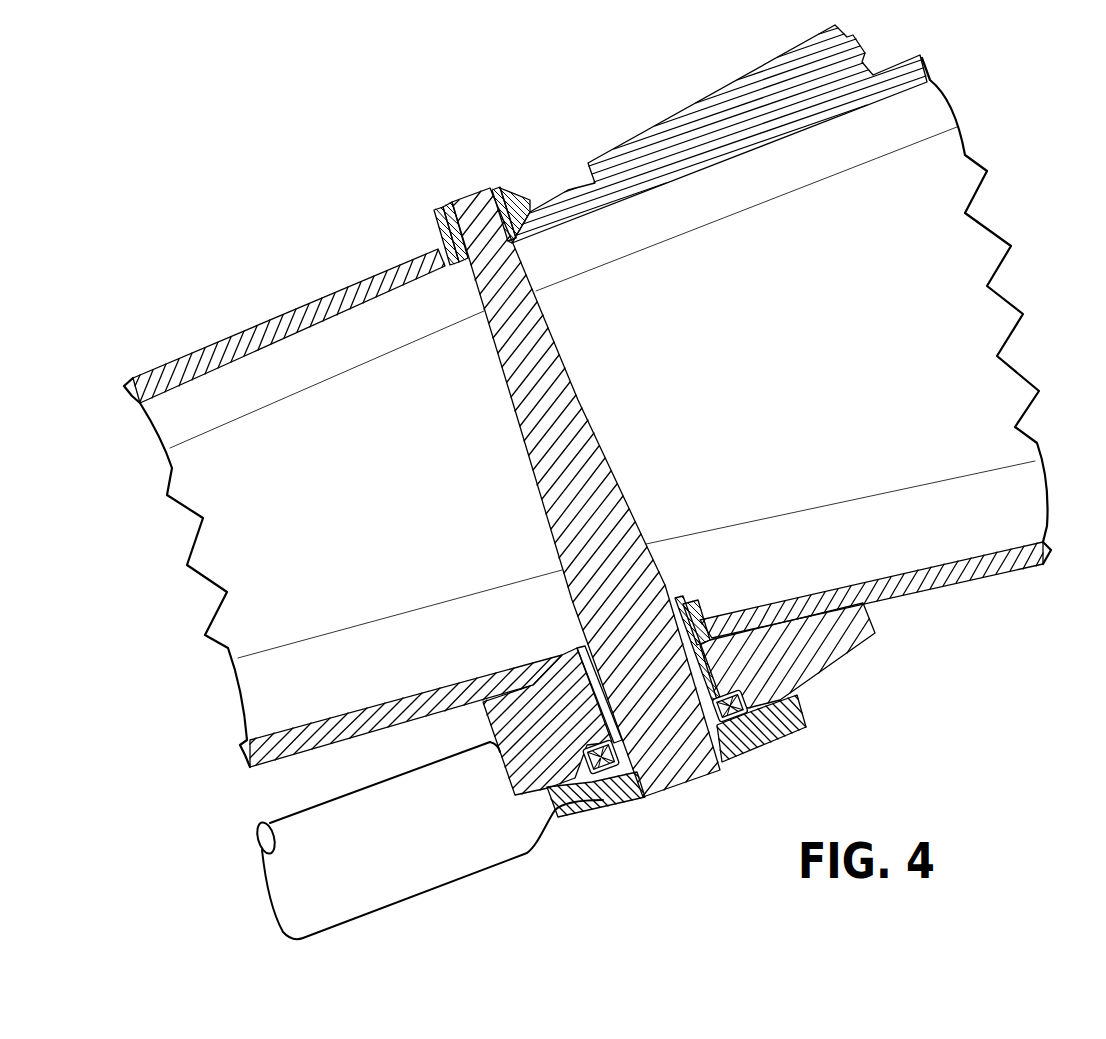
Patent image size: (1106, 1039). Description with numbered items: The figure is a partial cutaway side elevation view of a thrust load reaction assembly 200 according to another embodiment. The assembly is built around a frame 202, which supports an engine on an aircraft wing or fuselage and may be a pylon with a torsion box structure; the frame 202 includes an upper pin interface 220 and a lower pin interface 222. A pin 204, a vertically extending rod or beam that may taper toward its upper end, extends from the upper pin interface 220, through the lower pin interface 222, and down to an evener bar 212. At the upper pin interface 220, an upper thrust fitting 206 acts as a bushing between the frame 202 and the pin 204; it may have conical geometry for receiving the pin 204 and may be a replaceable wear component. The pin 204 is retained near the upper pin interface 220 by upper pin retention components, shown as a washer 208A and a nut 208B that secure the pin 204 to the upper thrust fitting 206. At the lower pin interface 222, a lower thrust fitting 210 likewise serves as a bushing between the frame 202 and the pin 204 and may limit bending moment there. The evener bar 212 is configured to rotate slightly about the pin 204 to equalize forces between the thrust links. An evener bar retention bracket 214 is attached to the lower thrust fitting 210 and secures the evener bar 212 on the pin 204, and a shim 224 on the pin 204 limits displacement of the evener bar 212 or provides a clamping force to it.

The thrust load reaction assembly 200 is at (416, 142).
The frame 202 is at (284, 306).
The pin 204 is at (526, 466).
The upper thrust fitting 206 is at (547, 184).
The washer 208A is at (440, 232).
The nut 208B is at (440, 212).
The lower thrust fitting 210 is at (852, 669).
The evener bar 212 is at (743, 738).
The evener bar retention bracket 214 is at (609, 810).
The upper pin interface 220 is at (535, 256).
The lower pin interface 222 is at (678, 600).
The shim 224 is at (586, 747).